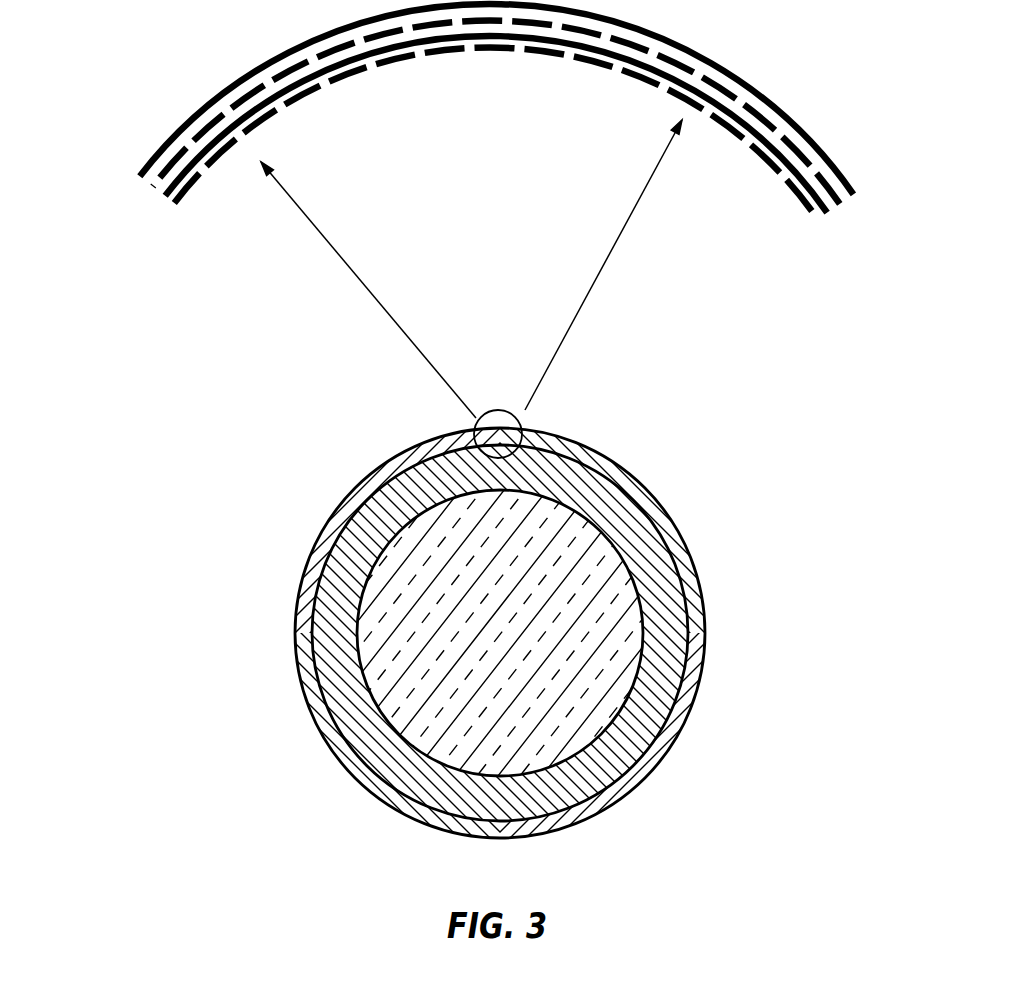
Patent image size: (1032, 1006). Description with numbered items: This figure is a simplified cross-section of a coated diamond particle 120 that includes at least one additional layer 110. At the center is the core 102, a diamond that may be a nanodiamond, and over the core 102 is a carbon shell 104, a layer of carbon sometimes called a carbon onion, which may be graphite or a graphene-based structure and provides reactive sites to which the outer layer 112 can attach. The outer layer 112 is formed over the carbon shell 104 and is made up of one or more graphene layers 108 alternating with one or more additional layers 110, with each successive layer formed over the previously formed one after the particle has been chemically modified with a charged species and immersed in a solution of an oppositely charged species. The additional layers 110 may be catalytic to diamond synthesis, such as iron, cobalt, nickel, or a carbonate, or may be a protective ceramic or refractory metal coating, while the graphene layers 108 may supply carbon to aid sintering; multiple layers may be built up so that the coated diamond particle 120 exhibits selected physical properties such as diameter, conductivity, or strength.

The core 102 is at (623, 597).
The carbon shell 104 is at (637, 532).
The graphene layer 108 is at (158, 183).
The additional layer 110 is at (148, 175).
The outer layer 112 is at (641, 482).
The coated diamond particle 120 is at (516, 503).